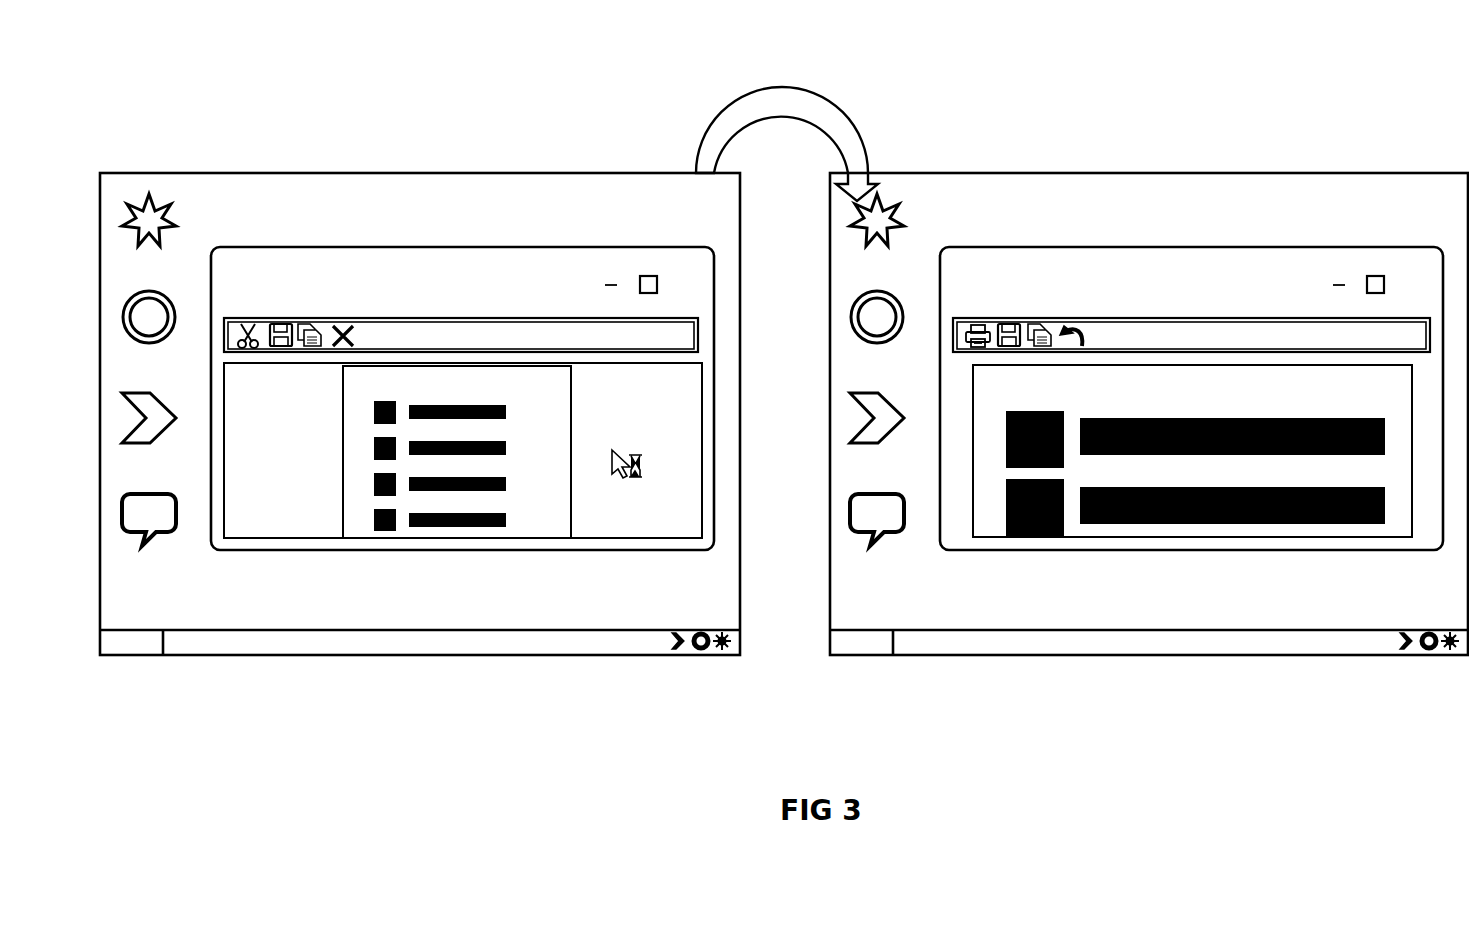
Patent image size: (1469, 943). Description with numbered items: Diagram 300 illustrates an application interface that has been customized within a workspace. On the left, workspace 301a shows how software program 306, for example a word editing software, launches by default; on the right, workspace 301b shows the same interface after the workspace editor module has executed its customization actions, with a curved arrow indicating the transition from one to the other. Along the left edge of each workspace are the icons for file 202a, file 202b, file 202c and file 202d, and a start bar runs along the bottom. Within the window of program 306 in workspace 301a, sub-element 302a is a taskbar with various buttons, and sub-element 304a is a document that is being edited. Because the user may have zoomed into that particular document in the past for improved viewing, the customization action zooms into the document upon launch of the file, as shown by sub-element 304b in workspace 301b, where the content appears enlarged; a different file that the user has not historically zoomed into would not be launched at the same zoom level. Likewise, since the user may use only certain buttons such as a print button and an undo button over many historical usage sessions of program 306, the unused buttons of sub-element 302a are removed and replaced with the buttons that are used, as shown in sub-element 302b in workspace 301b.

The diagram 300 is at (777, 48).
The workspace 301a is at (420, 474).
The workspace 301b is at (1149, 434).
The sub-element 302a is at (544, 172).
The sub-element 302b is at (1143, 342).
The sub-element 304a is at (453, 655).
The sub-element 304b is at (1193, 537).
The software program 306 is at (827, 427).
The file 202a is at (514, 231).
The file 202b is at (514, 331).
The file 202c is at (514, 433).
The file 202d is at (514, 532).